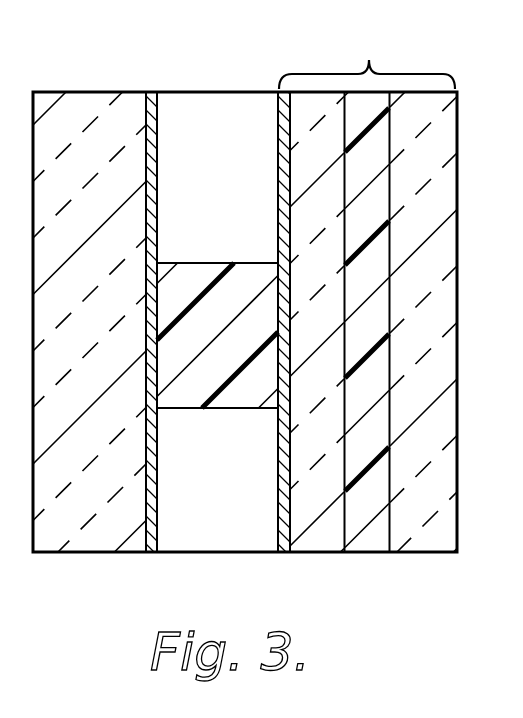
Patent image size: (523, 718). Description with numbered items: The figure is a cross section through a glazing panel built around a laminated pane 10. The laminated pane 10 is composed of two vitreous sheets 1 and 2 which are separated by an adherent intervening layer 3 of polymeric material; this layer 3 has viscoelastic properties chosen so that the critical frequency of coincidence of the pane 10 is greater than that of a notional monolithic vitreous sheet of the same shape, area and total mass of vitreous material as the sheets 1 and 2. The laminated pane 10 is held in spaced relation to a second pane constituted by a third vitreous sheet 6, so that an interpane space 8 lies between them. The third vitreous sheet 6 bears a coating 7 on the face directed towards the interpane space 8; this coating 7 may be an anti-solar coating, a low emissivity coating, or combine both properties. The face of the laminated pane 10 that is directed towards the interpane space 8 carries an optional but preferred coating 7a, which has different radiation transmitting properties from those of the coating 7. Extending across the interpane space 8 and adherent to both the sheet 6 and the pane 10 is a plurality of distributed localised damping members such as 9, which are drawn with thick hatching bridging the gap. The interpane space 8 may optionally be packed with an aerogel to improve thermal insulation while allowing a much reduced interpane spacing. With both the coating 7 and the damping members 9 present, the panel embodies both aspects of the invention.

The vitreous sheet 1 is at (323, 538).
The vitreous sheet 2 is at (438, 540).
The adherent intervening layer 3 is at (362, 538).
The third vitreous sheet 6 is at (103, 533).
The coating 7 is at (153, 540).
The coating 7a is at (277, 540).
The interpane space 8 is at (220, 193).
The localised damping member 9 is at (232, 395).
The laminated pane 10 is at (369, 57).